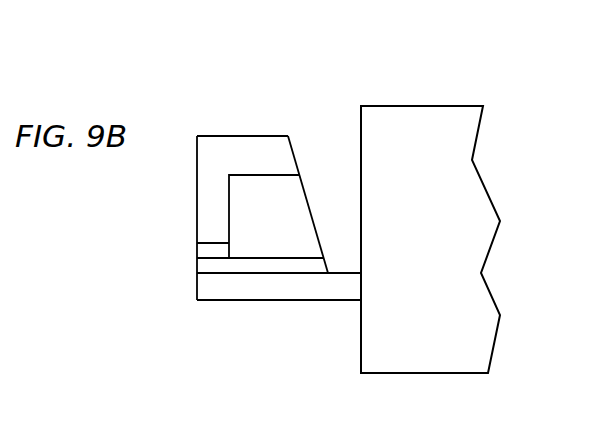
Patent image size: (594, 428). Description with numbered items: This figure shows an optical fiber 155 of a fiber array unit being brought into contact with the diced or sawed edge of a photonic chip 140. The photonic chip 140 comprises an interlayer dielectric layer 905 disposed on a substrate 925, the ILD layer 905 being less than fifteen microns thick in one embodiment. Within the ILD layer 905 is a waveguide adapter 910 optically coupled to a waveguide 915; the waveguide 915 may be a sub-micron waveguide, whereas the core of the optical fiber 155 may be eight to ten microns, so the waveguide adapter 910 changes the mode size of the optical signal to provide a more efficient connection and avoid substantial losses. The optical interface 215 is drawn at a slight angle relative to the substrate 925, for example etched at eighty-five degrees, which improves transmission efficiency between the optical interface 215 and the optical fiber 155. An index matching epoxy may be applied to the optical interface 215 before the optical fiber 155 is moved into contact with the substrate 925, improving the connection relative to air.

The interlayer dielectric (ILD) layer 905 is at (187, 274).
The waveguide adapter 910 is at (238, 174).
The optical interface 215 is at (298, 171).
The waveguide 915 is at (214, 260).
The substrate 925 is at (213, 301).
The optical fiber 155 is at (462, 141).
The photonic chip 140 is at (265, 311).